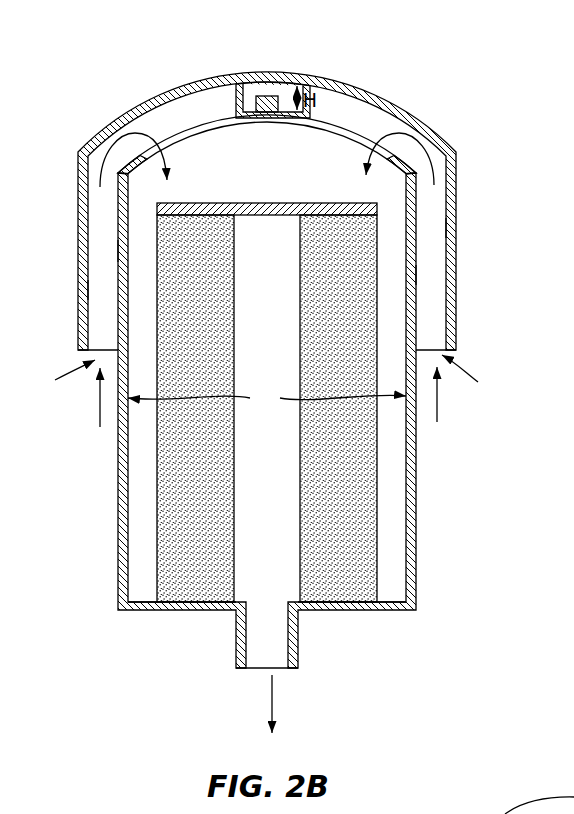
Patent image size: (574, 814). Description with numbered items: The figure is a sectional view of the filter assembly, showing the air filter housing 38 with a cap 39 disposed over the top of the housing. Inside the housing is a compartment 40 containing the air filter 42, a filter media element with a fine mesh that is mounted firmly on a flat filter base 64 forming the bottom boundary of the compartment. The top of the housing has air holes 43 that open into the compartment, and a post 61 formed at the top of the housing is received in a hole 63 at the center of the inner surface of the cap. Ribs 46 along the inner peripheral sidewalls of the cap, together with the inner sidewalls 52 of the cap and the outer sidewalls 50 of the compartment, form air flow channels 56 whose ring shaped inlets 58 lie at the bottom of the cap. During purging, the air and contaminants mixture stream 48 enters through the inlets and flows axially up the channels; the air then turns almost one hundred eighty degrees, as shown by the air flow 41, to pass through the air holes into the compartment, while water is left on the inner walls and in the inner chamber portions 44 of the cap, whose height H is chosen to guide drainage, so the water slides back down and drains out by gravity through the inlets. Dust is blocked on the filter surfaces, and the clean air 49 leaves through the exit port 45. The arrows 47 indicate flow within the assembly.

The air filter housing 38 is at (124, 608).
The cap 39 is at (143, 103).
The compartment 40 is at (275, 183).
The air flow 41 is at (133, 133).
The air filter 42 is at (168, 484).
The air holes 43 is at (200, 128).
The inner chamber portions 44 is at (368, 117).
The exit port 45 is at (281, 644).
The ribs 46 is at (100, 332).
The gas flow 47 is at (320, 150).
The air/contaminants mixture stream 48 is at (100, 418).
The clean air 49 is at (270, 698).
The outer sidewalls 50 is at (267, 398).
The inner sidewalls 52 is at (100, 290).
The air flow channels 56 is at (100, 246).
The inlets 58 is at (264, 375).
The post 61 is at (266, 100).
The hole 63 is at (241, 98).
The filter base 64 is at (178, 610).